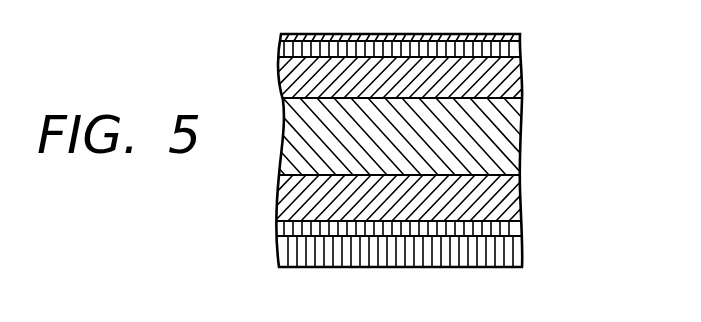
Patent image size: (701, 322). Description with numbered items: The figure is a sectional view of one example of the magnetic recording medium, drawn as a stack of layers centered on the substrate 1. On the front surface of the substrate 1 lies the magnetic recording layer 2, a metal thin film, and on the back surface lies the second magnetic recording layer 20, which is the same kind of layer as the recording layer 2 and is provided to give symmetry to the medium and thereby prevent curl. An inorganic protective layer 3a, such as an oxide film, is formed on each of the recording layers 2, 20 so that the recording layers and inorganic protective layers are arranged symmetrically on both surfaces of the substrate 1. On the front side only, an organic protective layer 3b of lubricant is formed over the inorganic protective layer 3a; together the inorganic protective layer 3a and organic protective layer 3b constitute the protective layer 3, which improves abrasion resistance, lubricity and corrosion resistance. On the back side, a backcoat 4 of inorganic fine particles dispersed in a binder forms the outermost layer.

The substrate 1 is at (521, 143).
The magnetic recording layer 2 is at (521, 82).
The protective layer 3 is at (599, 15).
The inorganic protective layer 3a is at (521, 52).
The organic protective layer 3b is at (521, 38).
The second magnetic recording layer 20 is at (521, 197).
The backcoat 4 is at (521, 255).